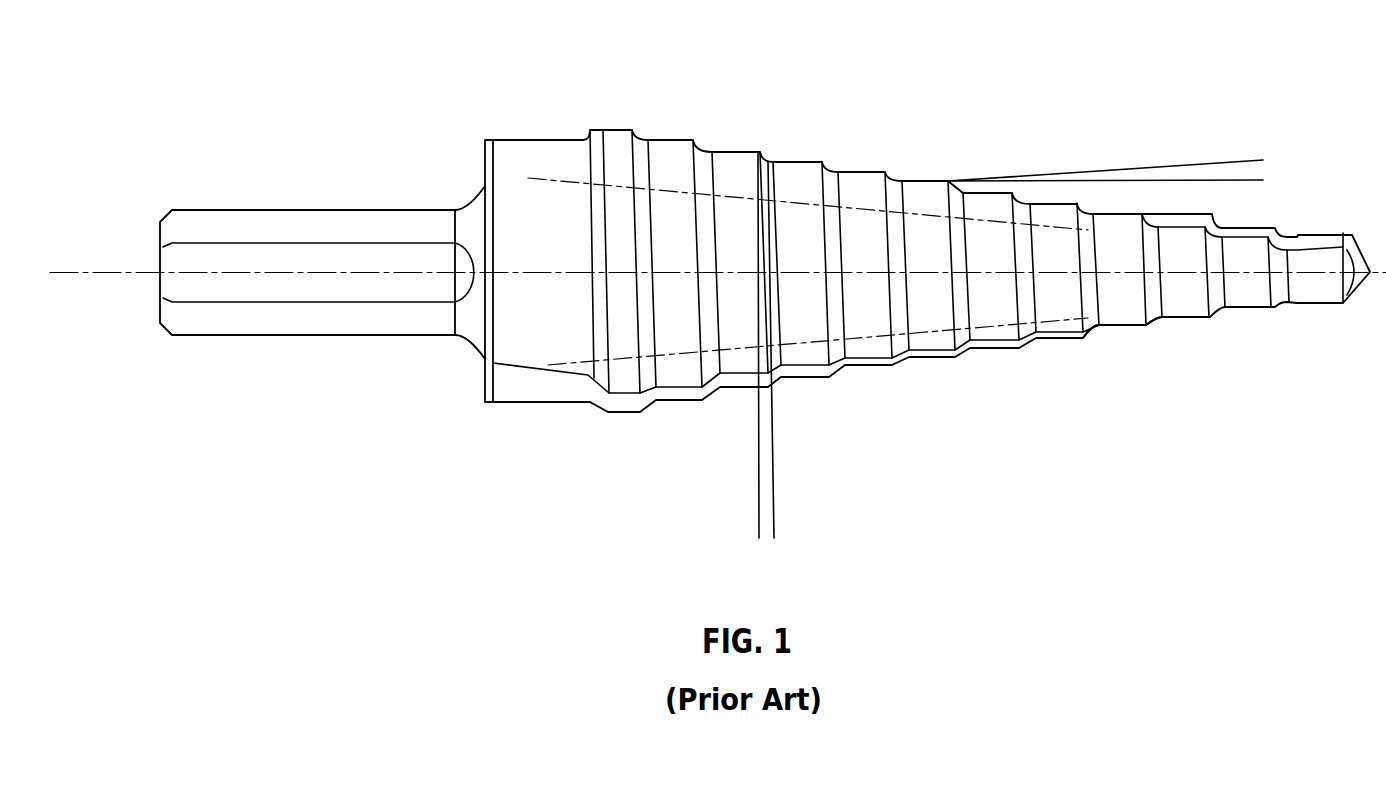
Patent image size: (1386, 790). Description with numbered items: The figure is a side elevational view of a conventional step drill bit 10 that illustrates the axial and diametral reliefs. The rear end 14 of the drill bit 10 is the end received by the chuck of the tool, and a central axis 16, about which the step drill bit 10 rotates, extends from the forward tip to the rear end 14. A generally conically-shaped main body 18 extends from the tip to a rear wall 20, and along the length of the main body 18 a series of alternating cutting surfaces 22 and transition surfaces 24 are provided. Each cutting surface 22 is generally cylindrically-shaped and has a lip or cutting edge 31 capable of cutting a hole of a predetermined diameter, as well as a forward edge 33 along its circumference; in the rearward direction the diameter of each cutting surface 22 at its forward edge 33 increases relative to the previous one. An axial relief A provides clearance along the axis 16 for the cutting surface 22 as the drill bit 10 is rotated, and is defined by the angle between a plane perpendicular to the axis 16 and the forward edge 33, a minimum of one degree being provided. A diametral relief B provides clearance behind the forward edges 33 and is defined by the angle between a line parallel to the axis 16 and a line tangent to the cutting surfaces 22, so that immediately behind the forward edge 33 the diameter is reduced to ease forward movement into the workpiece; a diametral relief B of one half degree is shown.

The step drill bit 10 is at (718, 291).
The rear end 14 is at (160, 253).
The central axis 16 is at (931, 260).
The main body 18 is at (662, 147).
The rear wall 20 is at (485, 176).
The cutting surface 22 is at (1178, 330).
The transition surface 24 is at (1133, 356).
The cutting edge 31 is at (802, 368).
The forward edge 33 is at (893, 328).
The axial relief A is at (784, 523).
The diametral relief B is at (1217, 191).